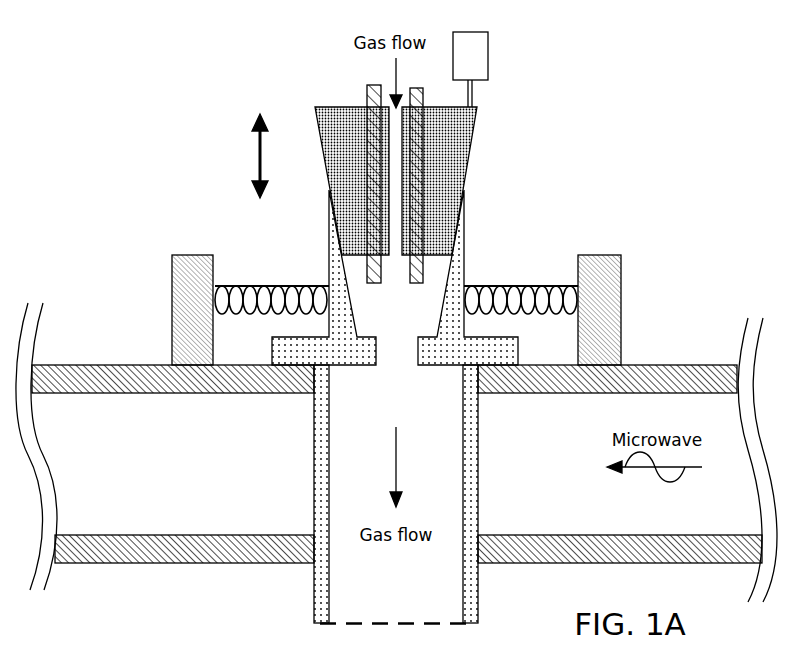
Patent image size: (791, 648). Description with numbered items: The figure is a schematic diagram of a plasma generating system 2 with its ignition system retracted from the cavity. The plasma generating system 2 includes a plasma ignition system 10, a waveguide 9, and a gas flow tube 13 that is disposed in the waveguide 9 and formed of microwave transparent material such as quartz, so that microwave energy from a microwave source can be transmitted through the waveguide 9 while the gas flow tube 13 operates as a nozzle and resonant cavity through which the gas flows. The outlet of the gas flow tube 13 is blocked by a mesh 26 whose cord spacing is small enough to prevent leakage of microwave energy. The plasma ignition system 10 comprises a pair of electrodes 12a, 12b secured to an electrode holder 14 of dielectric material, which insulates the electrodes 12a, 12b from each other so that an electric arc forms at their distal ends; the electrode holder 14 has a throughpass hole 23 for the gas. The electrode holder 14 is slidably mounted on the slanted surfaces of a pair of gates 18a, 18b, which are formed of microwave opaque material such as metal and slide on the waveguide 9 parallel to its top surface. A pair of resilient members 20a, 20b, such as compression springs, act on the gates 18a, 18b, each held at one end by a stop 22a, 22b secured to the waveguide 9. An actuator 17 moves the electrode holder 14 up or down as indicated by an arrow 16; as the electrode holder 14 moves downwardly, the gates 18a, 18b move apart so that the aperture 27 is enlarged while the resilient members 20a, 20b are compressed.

The plasma generating system 2 is at (52, 68).
The waveguide 9 is at (58, 382).
The plasma ignition system 10 is at (312, 98).
The electrode 12a is at (370, 85).
The electrode 12b is at (424, 88).
The gas flow tube 13 is at (478, 493).
The electrode holder 14 is at (465, 153).
The arrow 16 is at (258, 160).
The actuator 17 is at (488, 50).
The gate 18a is at (327, 258).
The gate 18b is at (465, 262).
The resilient member 20a is at (258, 288).
The resilient member 20b is at (530, 287).
The stop 22a is at (172, 290).
The stop 22b is at (620, 297).
The throughpass hole 23 is at (393, 253).
The mesh 26 is at (423, 627).
The aperture 27 is at (398, 363).